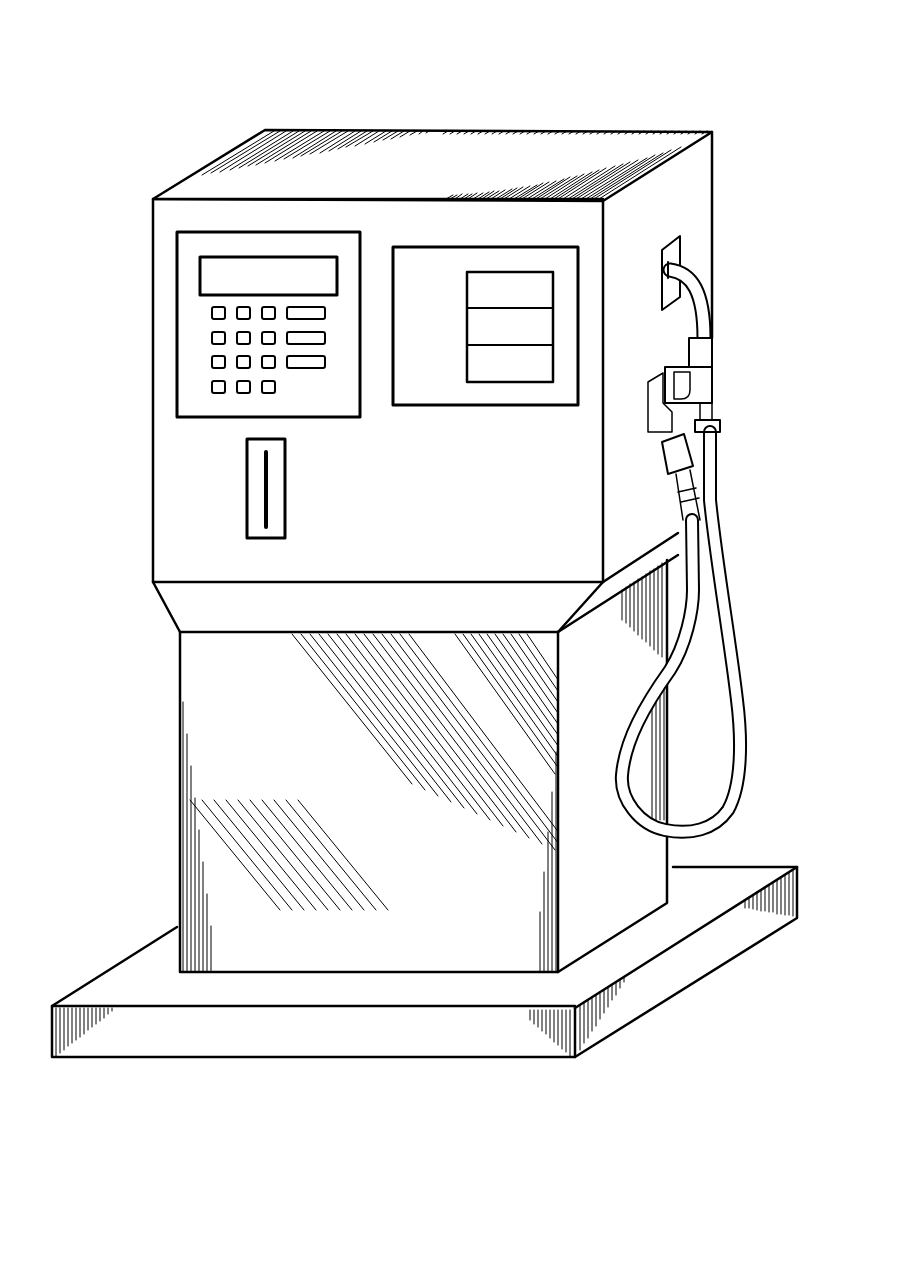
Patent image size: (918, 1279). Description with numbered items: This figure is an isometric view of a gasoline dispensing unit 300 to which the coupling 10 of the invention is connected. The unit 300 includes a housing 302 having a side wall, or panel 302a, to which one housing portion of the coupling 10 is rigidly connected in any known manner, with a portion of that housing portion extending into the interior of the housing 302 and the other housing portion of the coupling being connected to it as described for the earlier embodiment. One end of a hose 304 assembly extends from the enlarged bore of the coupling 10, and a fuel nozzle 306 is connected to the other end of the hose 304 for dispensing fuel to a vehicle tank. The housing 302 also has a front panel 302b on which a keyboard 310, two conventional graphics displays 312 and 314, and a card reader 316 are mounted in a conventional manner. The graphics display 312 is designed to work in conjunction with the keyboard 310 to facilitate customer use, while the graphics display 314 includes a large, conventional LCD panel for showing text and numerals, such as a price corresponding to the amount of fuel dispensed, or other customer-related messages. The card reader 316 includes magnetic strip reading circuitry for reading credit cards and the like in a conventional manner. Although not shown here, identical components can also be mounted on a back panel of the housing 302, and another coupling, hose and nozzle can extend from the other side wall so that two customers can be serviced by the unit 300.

The gasoline dispensing unit 300 is at (477, 96).
The housing 302 is at (575, 125).
The side wall, or panel 302a is at (712, 190).
The front panel 302b is at (460, 524).
The hose 304 is at (733, 647).
The fuel nozzle 306 is at (712, 352).
The keyboard 310 is at (213, 362).
The graphics display 312 is at (212, 280).
The graphics display 314 is at (485, 405).
The card reader 316 is at (247, 487).
The coupling 10 is at (675, 486).